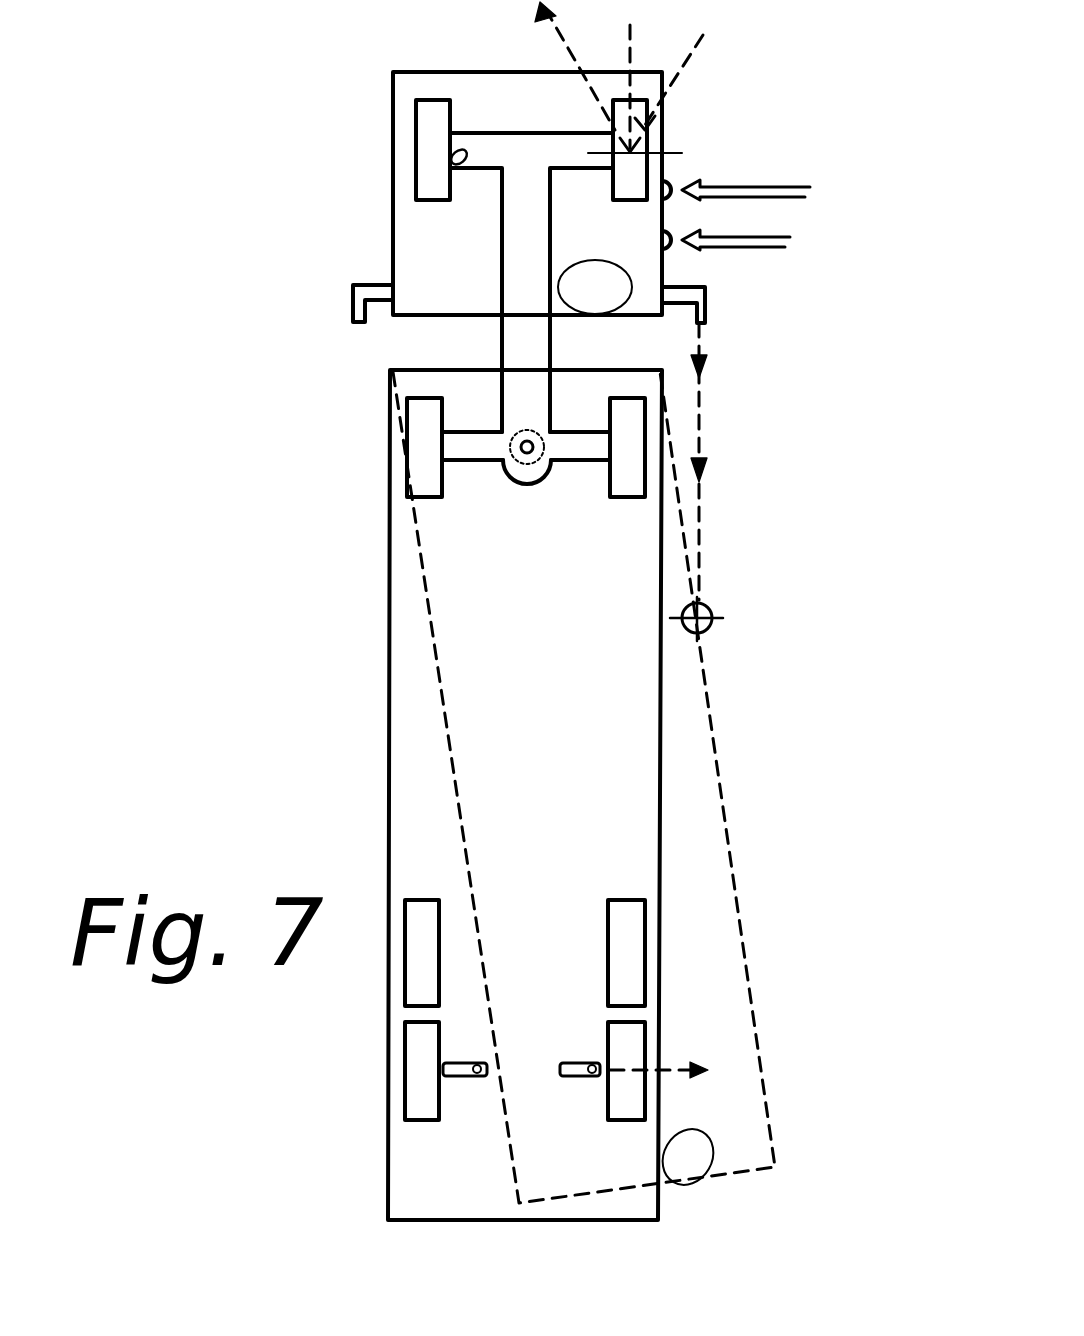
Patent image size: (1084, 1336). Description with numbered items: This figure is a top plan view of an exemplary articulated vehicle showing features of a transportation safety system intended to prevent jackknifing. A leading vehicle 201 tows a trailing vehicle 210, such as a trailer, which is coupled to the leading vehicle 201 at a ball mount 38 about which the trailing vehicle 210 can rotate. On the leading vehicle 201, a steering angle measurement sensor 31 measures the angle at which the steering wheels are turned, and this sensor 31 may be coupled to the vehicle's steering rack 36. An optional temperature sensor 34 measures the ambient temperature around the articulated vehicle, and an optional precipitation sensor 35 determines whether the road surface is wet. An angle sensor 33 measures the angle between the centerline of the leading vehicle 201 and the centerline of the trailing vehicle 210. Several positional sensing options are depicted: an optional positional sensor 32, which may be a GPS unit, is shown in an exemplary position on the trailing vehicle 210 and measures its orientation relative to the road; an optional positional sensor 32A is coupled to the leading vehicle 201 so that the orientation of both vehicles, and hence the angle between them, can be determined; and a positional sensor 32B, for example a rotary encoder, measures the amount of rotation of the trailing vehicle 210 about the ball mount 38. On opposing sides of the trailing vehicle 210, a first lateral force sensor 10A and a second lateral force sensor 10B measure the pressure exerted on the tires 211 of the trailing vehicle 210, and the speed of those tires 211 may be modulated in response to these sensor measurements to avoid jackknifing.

The leading vehicle 201 is at (668, 130).
The steering angle measurement sensor 31 is at (455, 163).
The steering rack 36 is at (466, 160).
The temperature sensor 34 is at (677, 178).
The precipitation sensor 35 is at (672, 250).
The positional sensor 32A is at (595, 287).
The angle sensor 33 is at (707, 305).
The ball mount 38 is at (525, 445).
The positional sensor 32B is at (527, 460).
The trailing vehicle 210 is at (757, 1018).
The tires 211 is at (630, 963).
The first lateral force sensor 10A is at (470, 1078).
The second lateral force sensor 10B is at (580, 1078).
The positional sensor 32 is at (688, 1157).